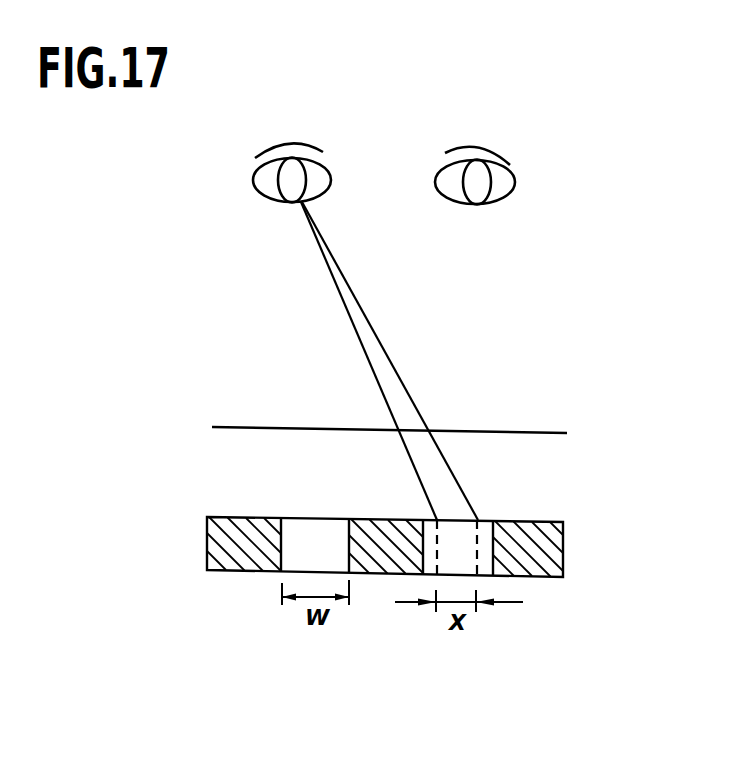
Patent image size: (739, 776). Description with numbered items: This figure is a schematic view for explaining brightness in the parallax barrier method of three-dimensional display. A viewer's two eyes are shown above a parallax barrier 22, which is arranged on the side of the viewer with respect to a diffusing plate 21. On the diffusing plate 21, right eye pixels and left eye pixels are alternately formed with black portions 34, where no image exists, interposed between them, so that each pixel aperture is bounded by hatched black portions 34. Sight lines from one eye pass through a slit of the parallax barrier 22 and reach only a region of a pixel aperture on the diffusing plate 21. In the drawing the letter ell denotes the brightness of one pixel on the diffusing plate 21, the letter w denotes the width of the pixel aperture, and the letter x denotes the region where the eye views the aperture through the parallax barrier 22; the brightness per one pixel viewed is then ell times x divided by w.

The diffusing plate 21 is at (560, 522).
The parallax barrier 22 is at (548, 433).
The black portion 34 is at (377, 575).